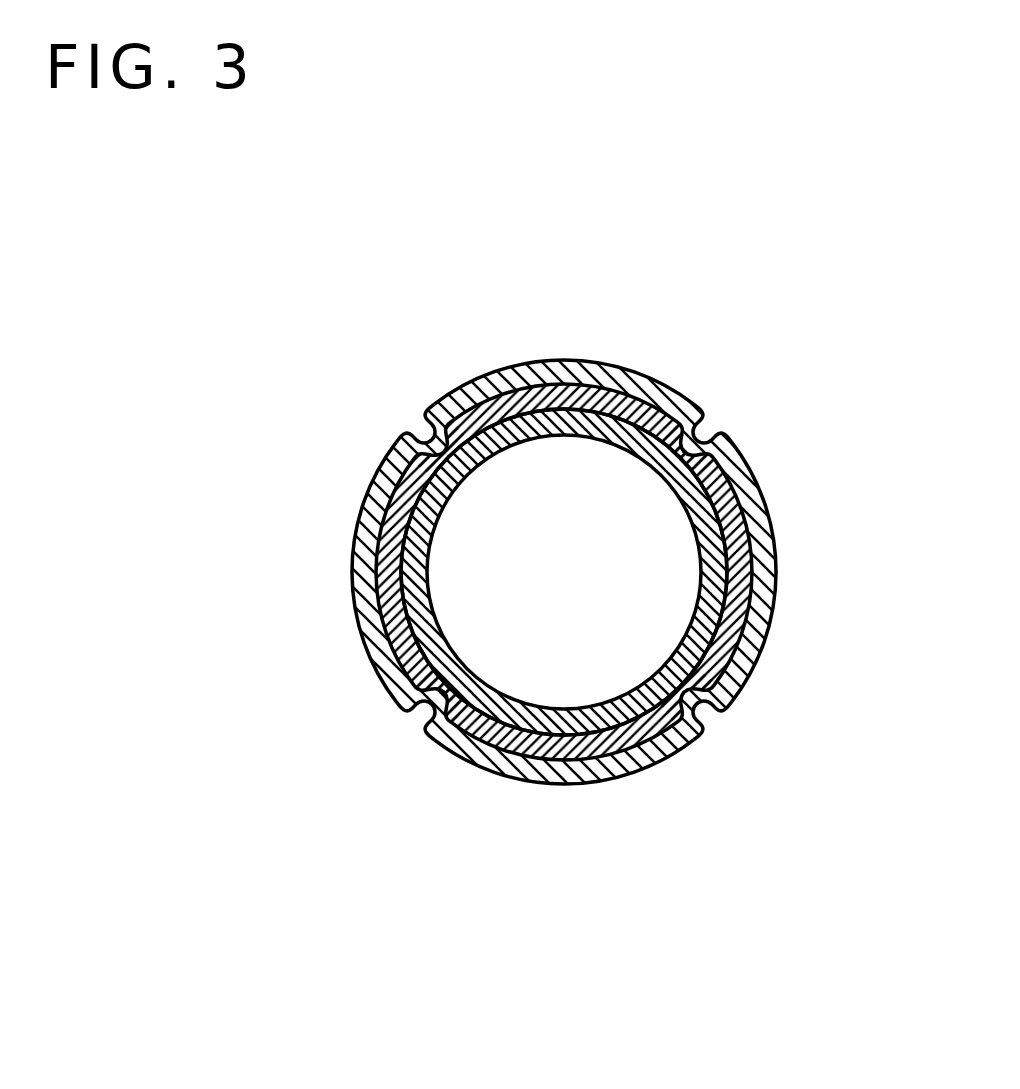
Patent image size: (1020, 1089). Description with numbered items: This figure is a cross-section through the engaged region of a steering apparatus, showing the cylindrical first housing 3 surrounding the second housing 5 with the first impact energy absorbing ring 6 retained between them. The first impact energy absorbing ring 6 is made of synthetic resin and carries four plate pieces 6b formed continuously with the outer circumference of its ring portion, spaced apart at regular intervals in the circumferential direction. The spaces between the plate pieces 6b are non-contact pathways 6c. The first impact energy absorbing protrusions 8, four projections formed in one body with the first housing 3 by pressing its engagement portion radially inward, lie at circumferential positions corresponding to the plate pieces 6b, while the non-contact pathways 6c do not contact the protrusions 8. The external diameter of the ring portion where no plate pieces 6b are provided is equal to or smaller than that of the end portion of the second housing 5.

The first housing 3 is at (743, 687).
The second housing 5 is at (713, 533).
The first impact energy absorbing ring 6 is at (767, 642).
The plate pieces 6b is at (566, 380).
The non-contact pathways 6c is at (437, 402).
The first impact energy absorbing protrusions 8 is at (705, 440).